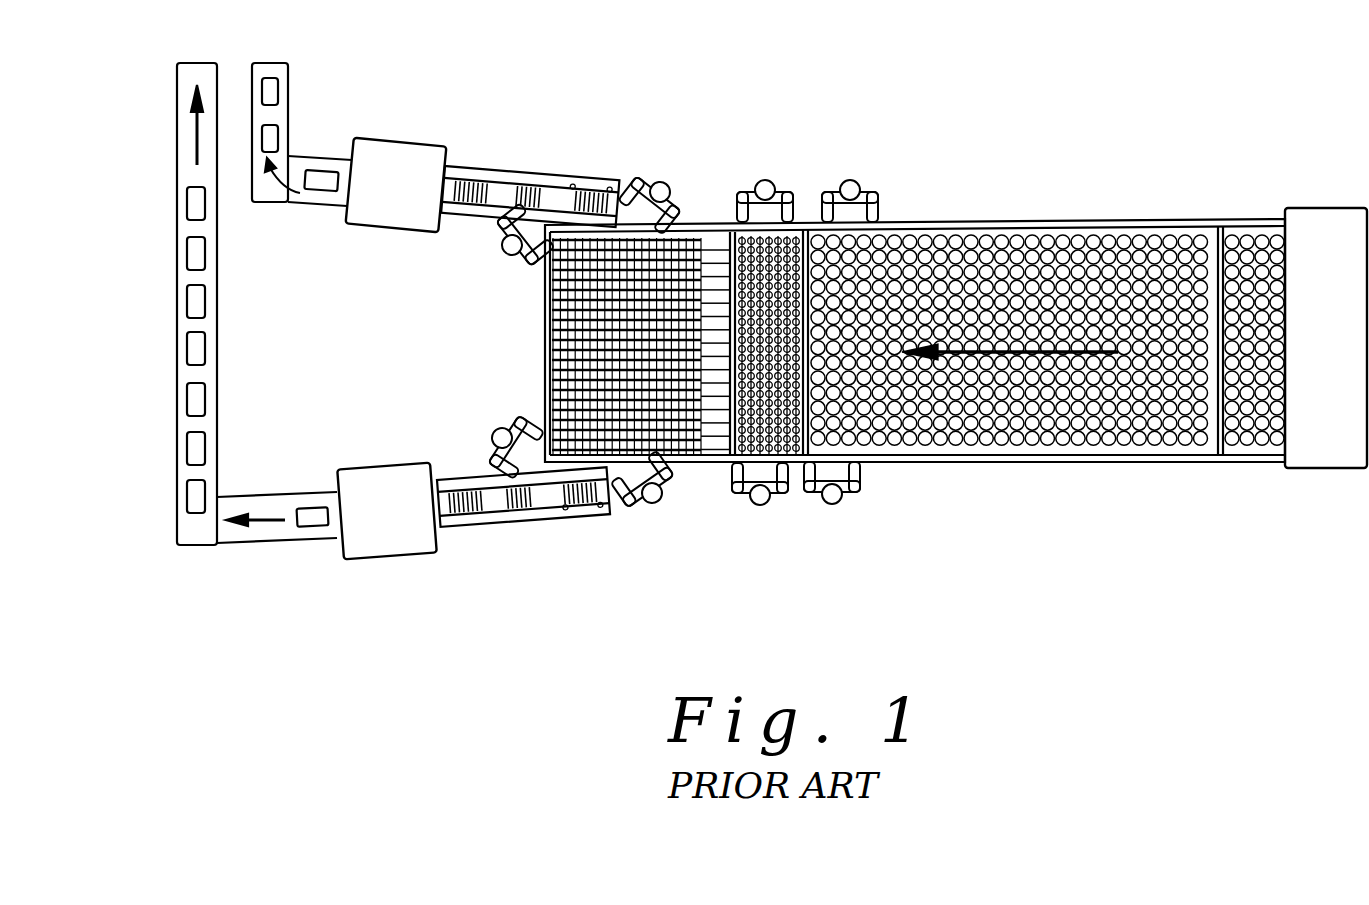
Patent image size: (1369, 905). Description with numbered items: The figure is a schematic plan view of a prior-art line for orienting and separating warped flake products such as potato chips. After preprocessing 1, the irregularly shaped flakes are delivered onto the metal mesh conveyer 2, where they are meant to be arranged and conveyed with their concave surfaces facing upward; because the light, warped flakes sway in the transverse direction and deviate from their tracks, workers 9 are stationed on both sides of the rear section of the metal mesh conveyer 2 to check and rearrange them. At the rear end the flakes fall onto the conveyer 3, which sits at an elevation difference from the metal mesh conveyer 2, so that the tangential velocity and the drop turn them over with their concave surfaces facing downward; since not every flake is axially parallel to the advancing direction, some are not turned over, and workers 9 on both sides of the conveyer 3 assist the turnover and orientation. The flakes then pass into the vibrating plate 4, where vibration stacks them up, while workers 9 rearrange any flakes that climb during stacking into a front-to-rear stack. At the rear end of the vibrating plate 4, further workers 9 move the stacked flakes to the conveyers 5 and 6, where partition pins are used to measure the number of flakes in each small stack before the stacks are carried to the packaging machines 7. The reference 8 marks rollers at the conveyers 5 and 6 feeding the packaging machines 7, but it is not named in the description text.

The preprocessing 1 is at (1324, 200).
The metal mesh conveyer 2 is at (1050, 210).
The conveyer 3 is at (727, 218).
The vibrating plate 4 is at (691, 224).
The conveyer 5 is at (539, 162).
The conveyer 6 is at (498, 535).
The packaging machines 7 is at (381, 246).
The rollers 8 is at (574, 182).
The workers 9 is at (660, 182).